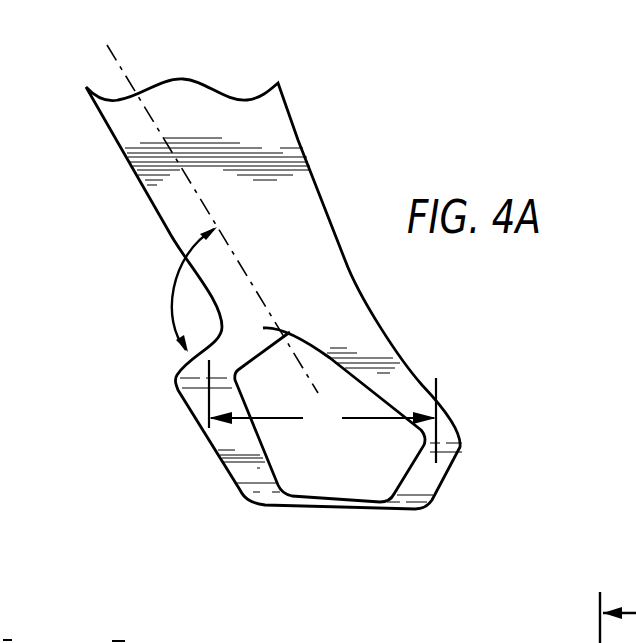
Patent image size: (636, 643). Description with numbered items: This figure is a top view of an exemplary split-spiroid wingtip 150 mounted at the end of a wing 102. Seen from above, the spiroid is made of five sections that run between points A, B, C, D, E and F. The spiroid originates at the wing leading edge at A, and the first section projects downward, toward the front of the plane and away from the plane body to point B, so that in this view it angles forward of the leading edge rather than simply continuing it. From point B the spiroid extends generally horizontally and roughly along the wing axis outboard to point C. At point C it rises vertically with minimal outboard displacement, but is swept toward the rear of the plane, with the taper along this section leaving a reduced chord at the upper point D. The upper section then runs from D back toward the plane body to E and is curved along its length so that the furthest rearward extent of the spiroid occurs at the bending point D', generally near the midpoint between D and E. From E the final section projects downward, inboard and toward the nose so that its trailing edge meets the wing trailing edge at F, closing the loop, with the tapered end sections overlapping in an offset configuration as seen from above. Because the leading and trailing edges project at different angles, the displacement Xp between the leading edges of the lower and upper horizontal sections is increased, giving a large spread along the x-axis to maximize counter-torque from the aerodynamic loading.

The prosthesis body / shaft 102 is at (293, 198).
The split-spiroid wingtip 150 is at (477, 377).
The displacement of the leading edges of the horizontal sections Xp is at (322, 411).
The point A is at (222, 327).
The point B is at (177, 375).
The point C is at (248, 498).
The point D is at (450, 531).
The bending point D' is at (495, 426).
The point E is at (422, 385).
The point F is at (375, 332).